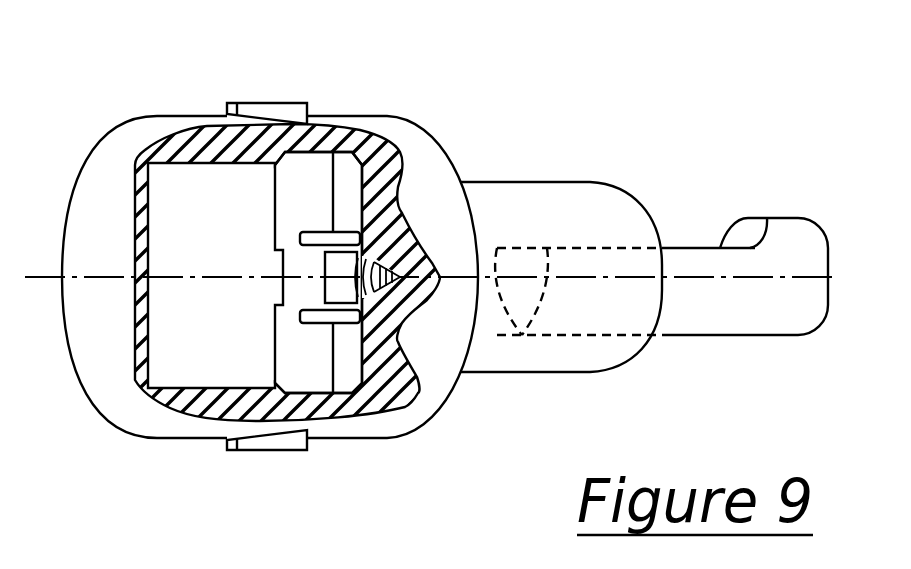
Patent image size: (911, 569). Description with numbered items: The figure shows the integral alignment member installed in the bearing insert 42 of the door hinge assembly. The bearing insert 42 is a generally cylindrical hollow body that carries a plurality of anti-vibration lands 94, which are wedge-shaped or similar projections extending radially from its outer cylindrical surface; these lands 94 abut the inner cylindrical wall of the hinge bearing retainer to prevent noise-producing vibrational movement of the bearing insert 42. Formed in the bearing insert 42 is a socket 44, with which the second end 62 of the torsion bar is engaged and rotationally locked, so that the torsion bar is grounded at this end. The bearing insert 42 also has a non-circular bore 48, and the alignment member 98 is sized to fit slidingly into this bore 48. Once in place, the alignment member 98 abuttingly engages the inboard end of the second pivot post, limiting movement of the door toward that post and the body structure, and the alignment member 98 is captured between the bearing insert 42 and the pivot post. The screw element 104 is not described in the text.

The bearing insert 42 is at (433, 168).
The socket 44 is at (593, 248).
The non-circular bore 48 is at (202, 158).
The second end of torsion bar 62 is at (690, 248).
The anti-vibration lands 94 is at (262, 108).
The alignment member 98 is at (302, 178).
The screw 104 is at (415, 292).